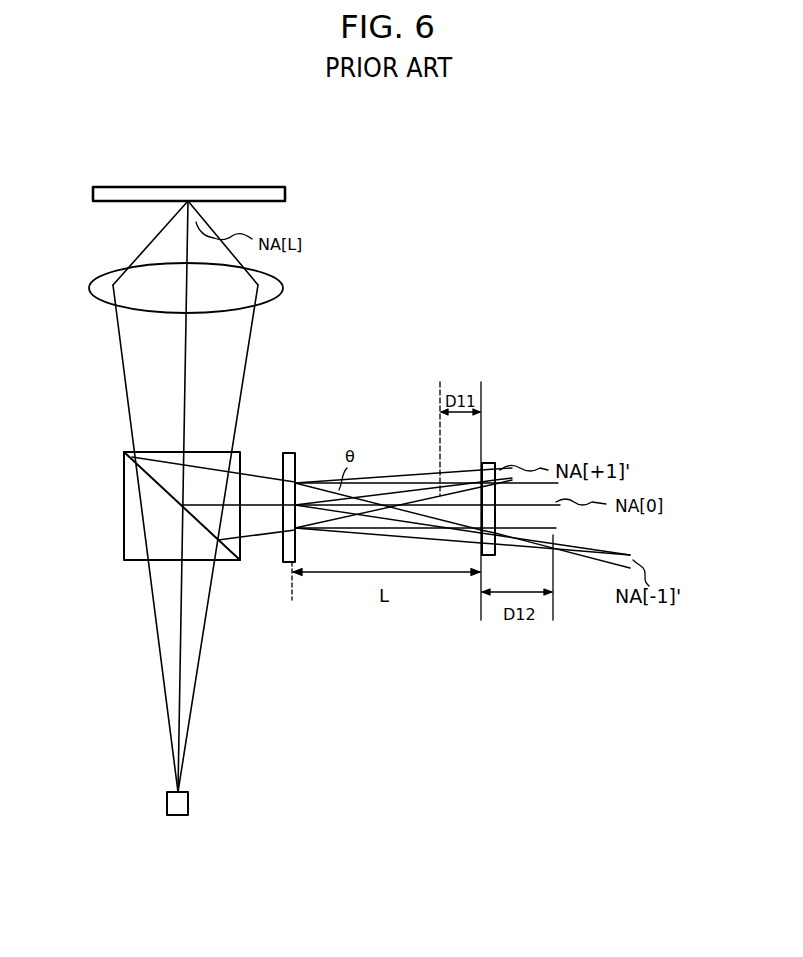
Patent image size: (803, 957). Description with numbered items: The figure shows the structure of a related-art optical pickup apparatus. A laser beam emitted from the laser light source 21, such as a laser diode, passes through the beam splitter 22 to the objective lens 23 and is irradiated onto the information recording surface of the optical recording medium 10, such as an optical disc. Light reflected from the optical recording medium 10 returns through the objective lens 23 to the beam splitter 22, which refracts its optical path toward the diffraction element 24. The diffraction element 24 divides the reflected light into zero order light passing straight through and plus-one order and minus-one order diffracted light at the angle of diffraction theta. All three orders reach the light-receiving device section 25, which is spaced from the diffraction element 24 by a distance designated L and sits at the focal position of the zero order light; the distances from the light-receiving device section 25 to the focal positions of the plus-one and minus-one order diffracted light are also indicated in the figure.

The optical recording medium 10 is at (272, 186).
The objective lens 23 is at (284, 291).
The beam splitter 22 is at (228, 567).
The laser light source 21 is at (189, 803).
The diffraction element 24 is at (290, 452).
The light-receiving device section 25 is at (492, 461).